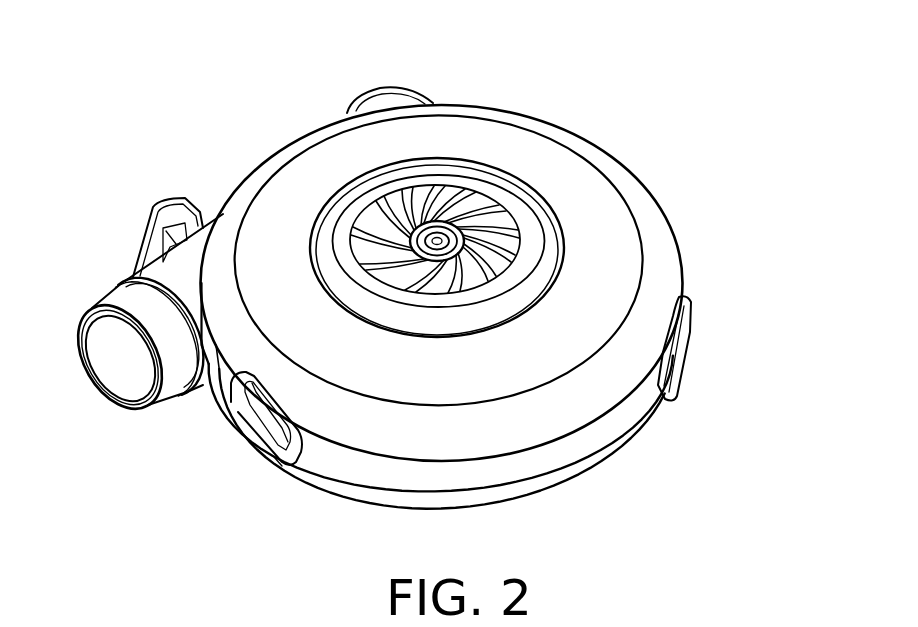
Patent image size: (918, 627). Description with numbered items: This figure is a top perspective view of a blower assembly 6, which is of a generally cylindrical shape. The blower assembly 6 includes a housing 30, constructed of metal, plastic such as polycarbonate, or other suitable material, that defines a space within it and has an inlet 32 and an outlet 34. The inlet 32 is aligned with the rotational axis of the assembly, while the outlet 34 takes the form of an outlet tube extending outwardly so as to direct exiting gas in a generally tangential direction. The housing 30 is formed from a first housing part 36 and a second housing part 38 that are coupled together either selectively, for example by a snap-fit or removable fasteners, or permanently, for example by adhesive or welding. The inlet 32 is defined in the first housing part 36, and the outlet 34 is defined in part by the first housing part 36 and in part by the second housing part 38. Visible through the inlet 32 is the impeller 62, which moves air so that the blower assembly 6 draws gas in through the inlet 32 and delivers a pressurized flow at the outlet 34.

The blower assembly 6 is at (158, 70).
The housing 30 is at (452, 297).
The inlet 32 is at (493, 193).
The outlet 34 is at (125, 362).
The first housing part 36 is at (604, 240).
The second housing part 38 is at (612, 450).
The impeller 62 is at (458, 183).